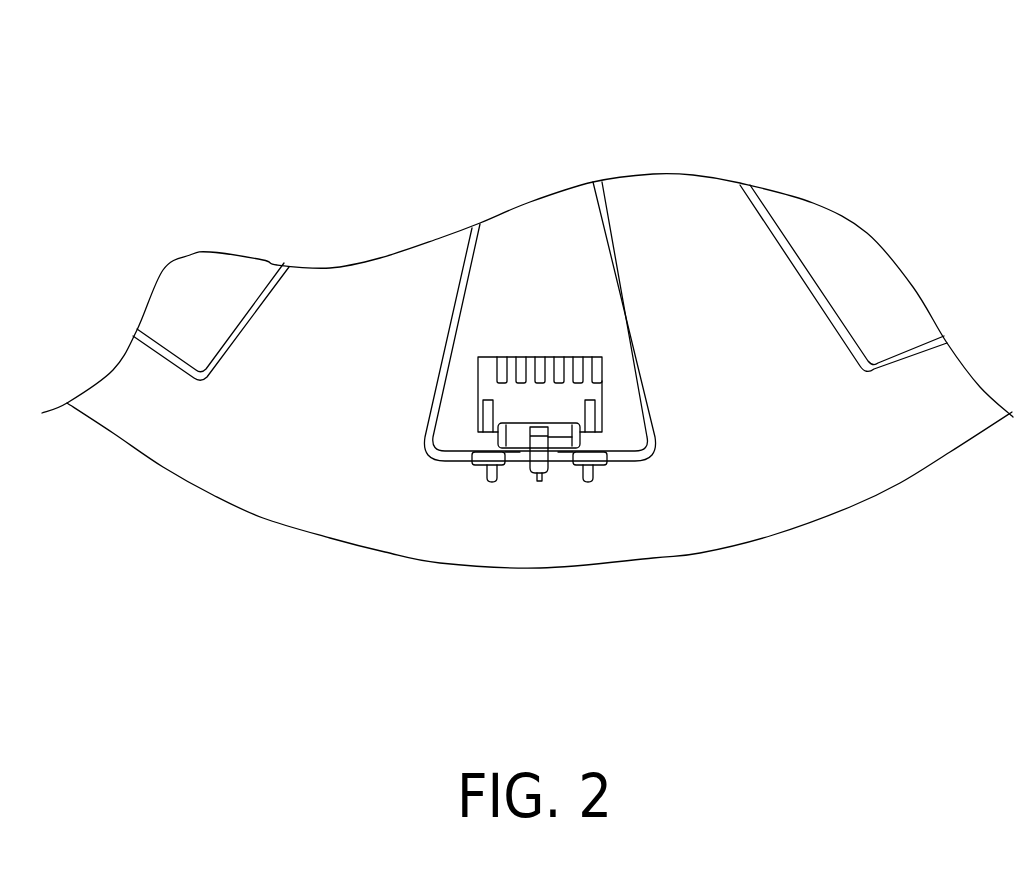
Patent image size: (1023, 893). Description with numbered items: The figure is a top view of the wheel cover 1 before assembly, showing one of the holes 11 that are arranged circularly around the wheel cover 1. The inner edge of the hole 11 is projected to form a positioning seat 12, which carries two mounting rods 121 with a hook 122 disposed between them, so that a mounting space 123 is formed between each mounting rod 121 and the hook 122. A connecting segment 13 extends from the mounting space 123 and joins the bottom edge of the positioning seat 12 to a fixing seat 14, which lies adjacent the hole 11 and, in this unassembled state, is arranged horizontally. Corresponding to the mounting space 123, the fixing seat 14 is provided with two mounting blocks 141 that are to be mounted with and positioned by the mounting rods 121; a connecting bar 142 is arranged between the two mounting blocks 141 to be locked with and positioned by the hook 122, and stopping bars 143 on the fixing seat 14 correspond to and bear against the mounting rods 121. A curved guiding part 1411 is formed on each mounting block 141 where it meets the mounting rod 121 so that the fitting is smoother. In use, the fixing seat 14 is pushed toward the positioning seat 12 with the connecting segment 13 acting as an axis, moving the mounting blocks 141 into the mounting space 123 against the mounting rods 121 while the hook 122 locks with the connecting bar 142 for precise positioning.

The wheel cover 1 is at (527, 294).
The hole 11 is at (540, 253).
The positioning seat 12 is at (581, 453).
The mounting rod 121 is at (484, 466).
The hook 122 is at (540, 463).
The mounting space 123 is at (520, 472).
The connecting segment 13 is at (517, 453).
The fixing seat 14 is at (579, 355).
The mounting block 141 is at (653, 381).
The curved guiding part 1411 is at (555, 445).
The connecting bar 142 is at (540, 430).
The stopping bar 143 is at (487, 402).